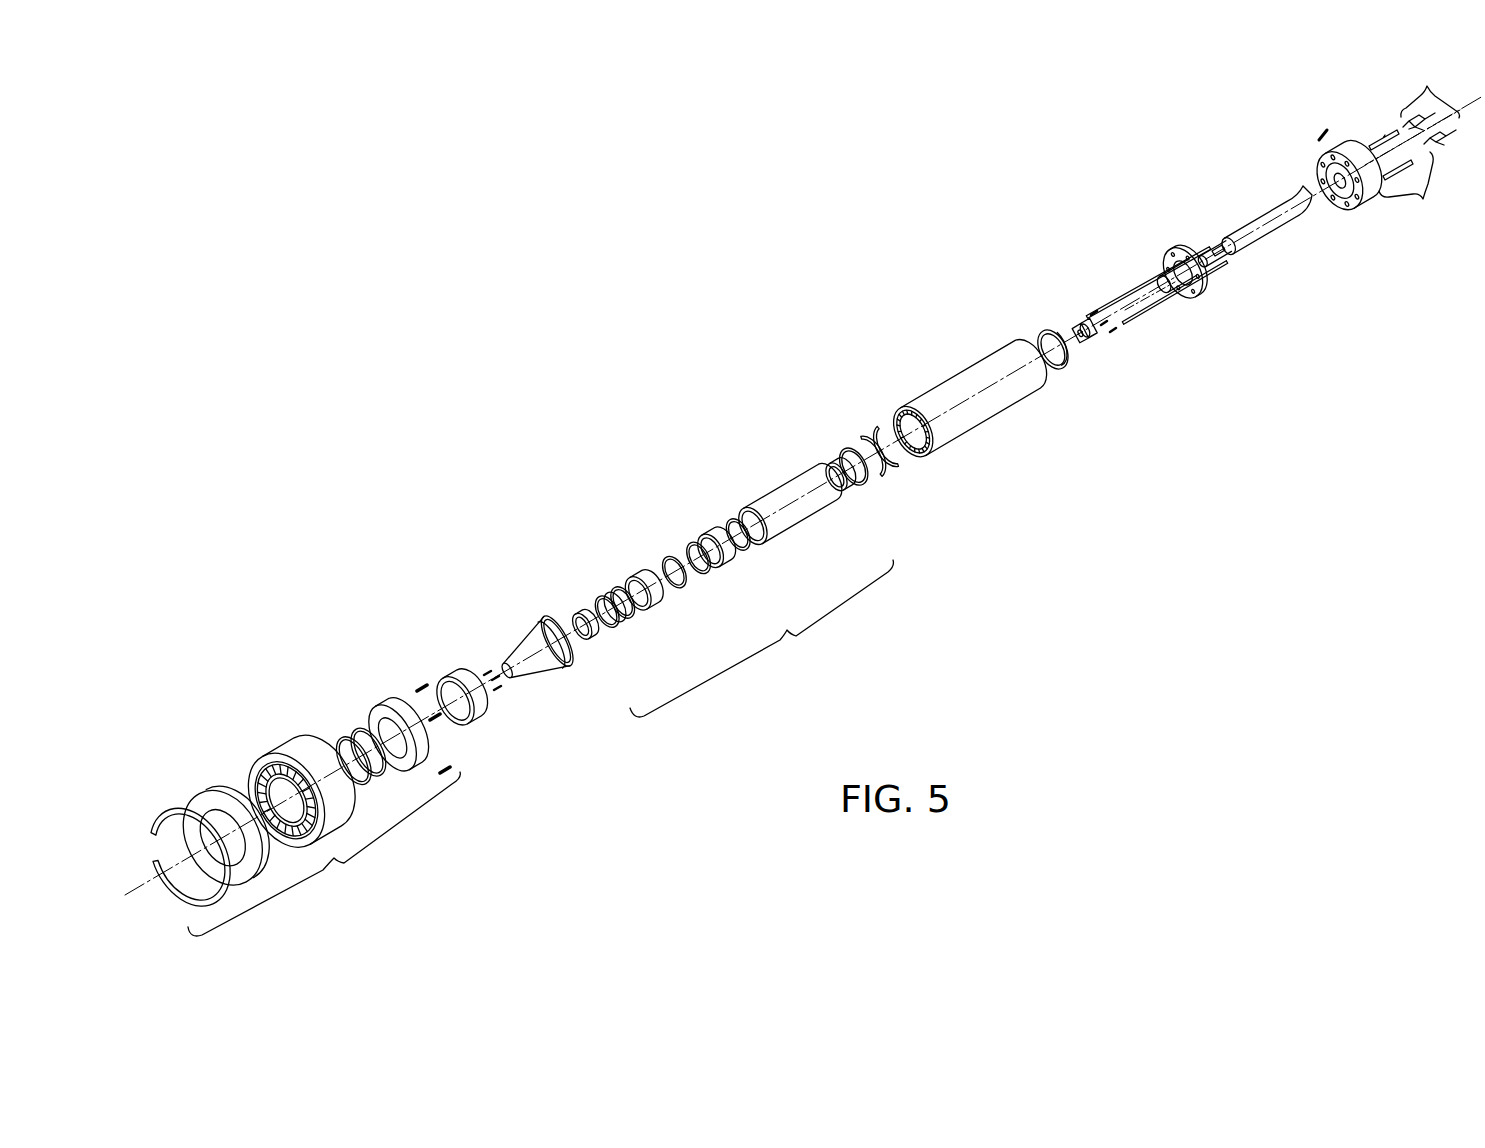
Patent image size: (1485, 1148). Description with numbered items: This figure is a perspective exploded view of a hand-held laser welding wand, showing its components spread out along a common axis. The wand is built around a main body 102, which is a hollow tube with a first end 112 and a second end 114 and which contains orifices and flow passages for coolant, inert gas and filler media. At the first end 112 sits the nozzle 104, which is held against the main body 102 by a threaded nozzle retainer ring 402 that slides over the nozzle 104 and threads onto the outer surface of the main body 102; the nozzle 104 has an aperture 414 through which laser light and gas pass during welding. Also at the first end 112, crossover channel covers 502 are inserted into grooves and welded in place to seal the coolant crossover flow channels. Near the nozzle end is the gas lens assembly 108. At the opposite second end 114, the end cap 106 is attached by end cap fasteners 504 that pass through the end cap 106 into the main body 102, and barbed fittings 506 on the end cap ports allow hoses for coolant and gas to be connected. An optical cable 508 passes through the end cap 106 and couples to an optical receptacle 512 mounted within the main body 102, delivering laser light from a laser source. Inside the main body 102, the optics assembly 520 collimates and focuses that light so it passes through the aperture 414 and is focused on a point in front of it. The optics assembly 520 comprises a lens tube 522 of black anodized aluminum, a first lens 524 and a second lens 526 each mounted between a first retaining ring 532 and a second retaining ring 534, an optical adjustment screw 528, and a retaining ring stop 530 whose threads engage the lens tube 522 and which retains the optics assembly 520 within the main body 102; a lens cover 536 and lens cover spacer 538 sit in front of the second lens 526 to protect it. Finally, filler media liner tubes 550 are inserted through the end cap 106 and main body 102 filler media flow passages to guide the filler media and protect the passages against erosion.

The main body 102 is at (970, 363).
The nozzle 104 is at (543, 677).
The end cap 106 is at (1363, 210).
The gas lens assembly 108 is at (305, 810).
The first end 112 is at (897, 410).
The second end 114 is at (1047, 377).
The nozzle retainer ring 402 is at (478, 722).
The aperture 414 is at (500, 662).
The crossover channel cover 502 is at (865, 430).
The end cap fasteners 504 is at (1412, 169).
The barbed fitting 506 is at (1430, 104).
The optical cable 508 is at (1267, 210).
The optical receptacle 512 is at (1073, 320).
The optics assembly 520 is at (706, 573).
The lens tube 522 is at (795, 476).
The first lens 524 is at (707, 535).
The second lens 526 is at (650, 568).
The optical adjustment screw 528 is at (837, 497).
The retaining ring stop 530 is at (573, 614).
The first retaining ring 532 is at (612, 633).
The second retaining ring 534 is at (687, 588).
The lens cover 536 is at (610, 597).
The lens cover spacer 538 is at (645, 613).
The filler media liner tubes 550 is at (1197, 245).